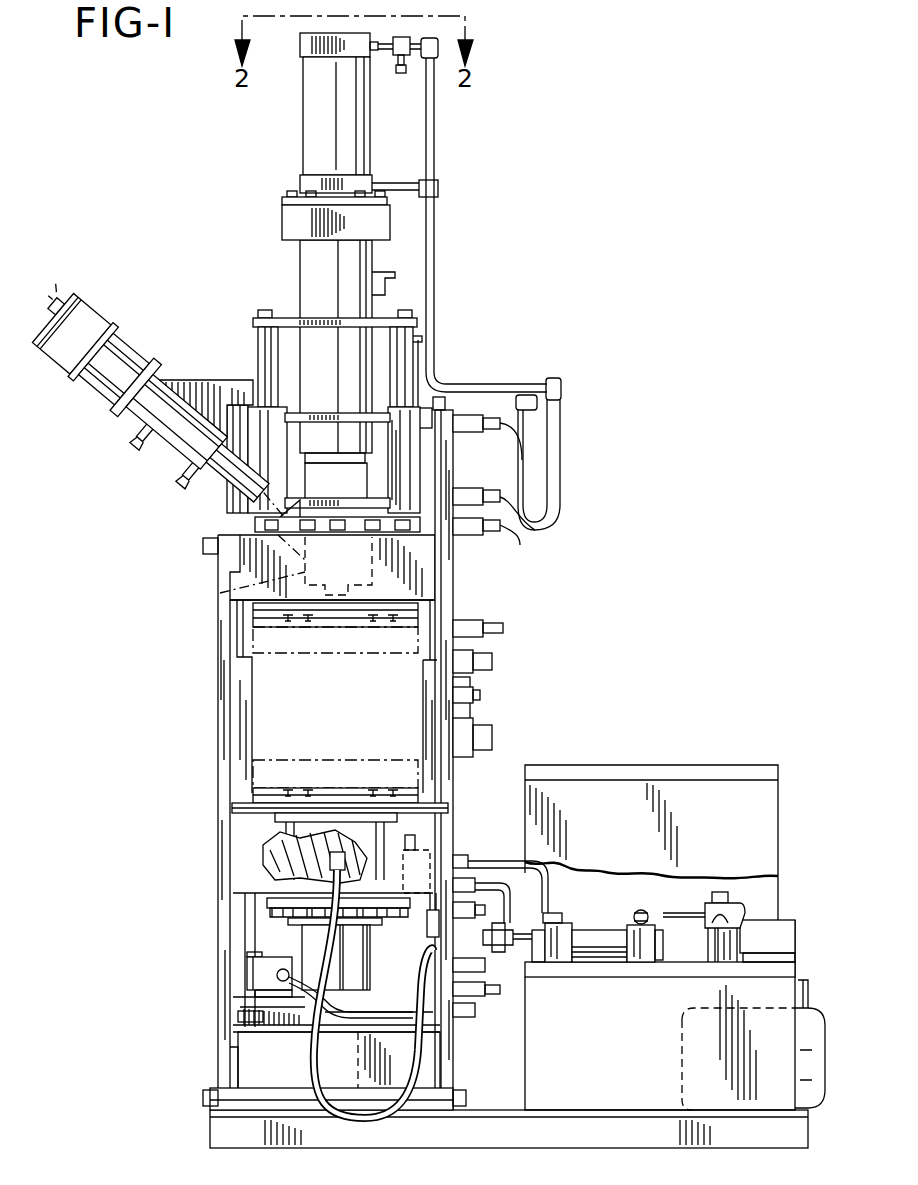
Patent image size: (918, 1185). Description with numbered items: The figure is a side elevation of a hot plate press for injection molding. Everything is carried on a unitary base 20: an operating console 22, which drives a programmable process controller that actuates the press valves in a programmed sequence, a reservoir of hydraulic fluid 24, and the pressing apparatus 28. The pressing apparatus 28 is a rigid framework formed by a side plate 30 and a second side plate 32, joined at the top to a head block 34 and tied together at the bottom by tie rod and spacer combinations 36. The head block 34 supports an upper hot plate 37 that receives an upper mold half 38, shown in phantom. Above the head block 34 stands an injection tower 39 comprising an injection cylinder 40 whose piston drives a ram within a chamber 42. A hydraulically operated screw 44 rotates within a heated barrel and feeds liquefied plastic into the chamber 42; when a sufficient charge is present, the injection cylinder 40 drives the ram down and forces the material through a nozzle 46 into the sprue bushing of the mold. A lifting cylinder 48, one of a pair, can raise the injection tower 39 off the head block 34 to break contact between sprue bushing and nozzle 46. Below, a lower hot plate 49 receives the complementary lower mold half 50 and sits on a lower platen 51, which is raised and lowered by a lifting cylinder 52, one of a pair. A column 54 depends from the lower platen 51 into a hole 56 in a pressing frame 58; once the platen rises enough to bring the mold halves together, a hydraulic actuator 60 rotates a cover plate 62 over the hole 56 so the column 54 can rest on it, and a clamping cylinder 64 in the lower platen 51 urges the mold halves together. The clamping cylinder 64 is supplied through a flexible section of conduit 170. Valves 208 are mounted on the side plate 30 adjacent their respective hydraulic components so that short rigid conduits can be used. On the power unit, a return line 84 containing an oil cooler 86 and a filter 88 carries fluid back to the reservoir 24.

The unitary base 20 is at (566, 1140).
The operating console 22 is at (618, 790).
The reservoir of hydraulic fluid 24 is at (655, 1046).
The pressing apparatus 28 is at (462, 356).
The side plate 30 is at (455, 605).
The side plate 32 is at (218, 708).
The head block 34 is at (437, 587).
The tie rod and spacer combinations 36 is at (265, 1104).
The upper hot plate 37 is at (343, 625).
The upper mold half 38 is at (280, 655).
The injection tower 39 is at (312, 276).
The injection cylinder 40 is at (312, 130).
The chamber 42 is at (232, 590).
The hydraulically operated screw 44 is at (125, 350).
The nozzle 46 is at (338, 592).
The lifting cylinder 48 is at (422, 466).
The lower hot plate 49 is at (322, 790).
The lower mold half 50 is at (288, 745).
The lower platen 51 is at (268, 826).
The lifting cylinder 52 is at (410, 972).
The column 54 is at (357, 1003).
The hole 56 is at (308, 1040).
The pressing frame 58 is at (238, 1048).
The hydraulic actuator 60 is at (247, 972).
The cover plate 62 is at (240, 1016).
The clamping cylinder 64 is at (258, 860).
The return line 84 is at (497, 862).
The oil cooler 86 is at (583, 935).
The filter 88 is at (745, 905).
The flexible section of conduit 170 is at (420, 1067).
The valves 208 is at (500, 528).